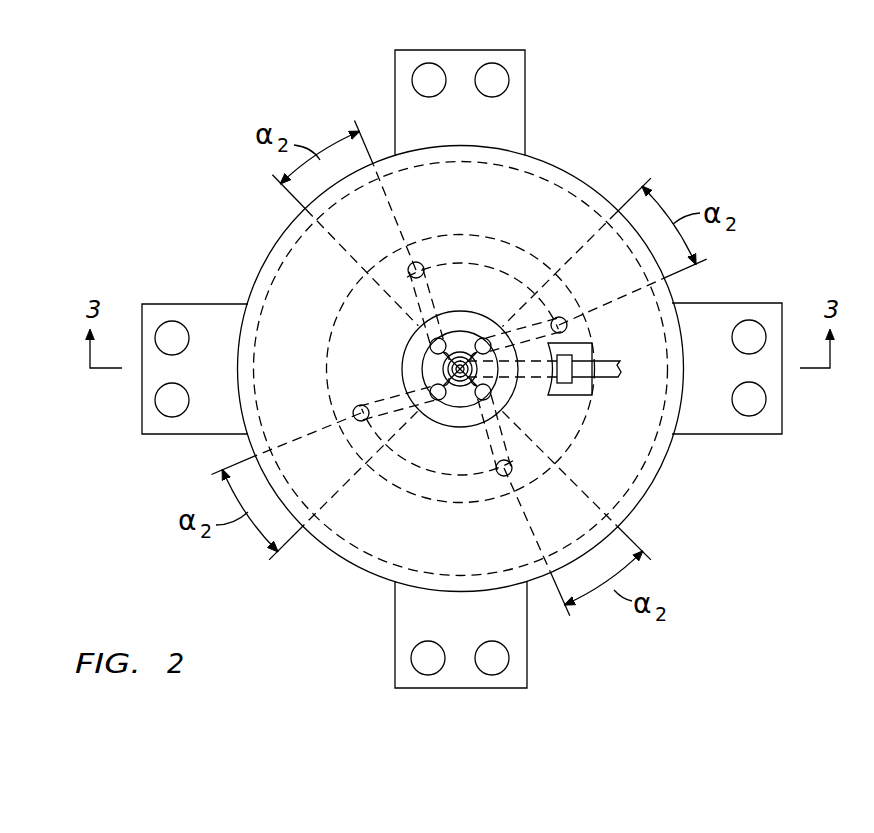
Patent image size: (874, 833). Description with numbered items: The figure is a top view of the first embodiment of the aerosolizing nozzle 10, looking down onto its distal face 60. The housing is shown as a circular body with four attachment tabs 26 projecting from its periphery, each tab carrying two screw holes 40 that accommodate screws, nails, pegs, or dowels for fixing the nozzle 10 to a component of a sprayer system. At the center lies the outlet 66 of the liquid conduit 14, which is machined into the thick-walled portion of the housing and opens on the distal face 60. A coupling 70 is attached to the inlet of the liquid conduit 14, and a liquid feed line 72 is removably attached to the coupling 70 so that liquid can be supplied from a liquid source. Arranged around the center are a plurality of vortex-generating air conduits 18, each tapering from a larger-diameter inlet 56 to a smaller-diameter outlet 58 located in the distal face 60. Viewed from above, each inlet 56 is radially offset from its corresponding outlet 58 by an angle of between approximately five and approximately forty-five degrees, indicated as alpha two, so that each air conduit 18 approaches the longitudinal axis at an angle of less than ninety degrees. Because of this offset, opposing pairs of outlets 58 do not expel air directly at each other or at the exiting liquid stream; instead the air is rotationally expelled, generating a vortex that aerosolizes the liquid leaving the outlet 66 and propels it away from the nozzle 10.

The aerosolizing nozzle 10 is at (641, 140).
The attachment tabs 26 is at (525, 110).
The screw holes 40 is at (506, 74).
The air conduit inlet 56 is at (418, 262).
The vortex-generating air conduits 18 is at (455, 266).
The liquid conduit 14 is at (516, 395).
The air conduit outlet 58 is at (452, 331).
The liquid conduit outlet 66 is at (460, 369).
The distal face 60 is at (447, 352).
The coupling 70 is at (568, 398).
The liquid feed line 72 is at (606, 378).